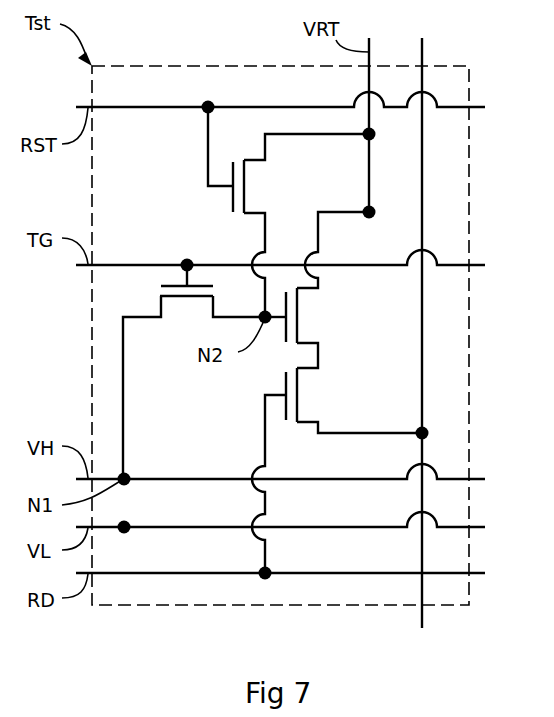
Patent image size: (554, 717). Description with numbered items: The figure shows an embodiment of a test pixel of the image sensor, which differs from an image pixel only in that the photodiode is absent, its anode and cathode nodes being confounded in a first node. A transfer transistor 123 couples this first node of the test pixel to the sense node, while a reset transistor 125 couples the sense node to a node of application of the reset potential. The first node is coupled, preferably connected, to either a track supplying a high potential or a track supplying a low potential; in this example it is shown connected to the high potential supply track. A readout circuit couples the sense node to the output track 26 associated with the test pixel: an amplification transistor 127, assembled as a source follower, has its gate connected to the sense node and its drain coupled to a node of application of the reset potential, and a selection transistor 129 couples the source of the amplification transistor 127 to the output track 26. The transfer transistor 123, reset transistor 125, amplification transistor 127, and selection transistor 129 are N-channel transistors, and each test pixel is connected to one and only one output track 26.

The output track 26 is at (422, 52).
The transfer transistor 123 is at (160, 299).
The reset transistor 125 is at (233, 200).
The amplification transistor 127 is at (308, 342).
The selection transistor 129 is at (308, 424).